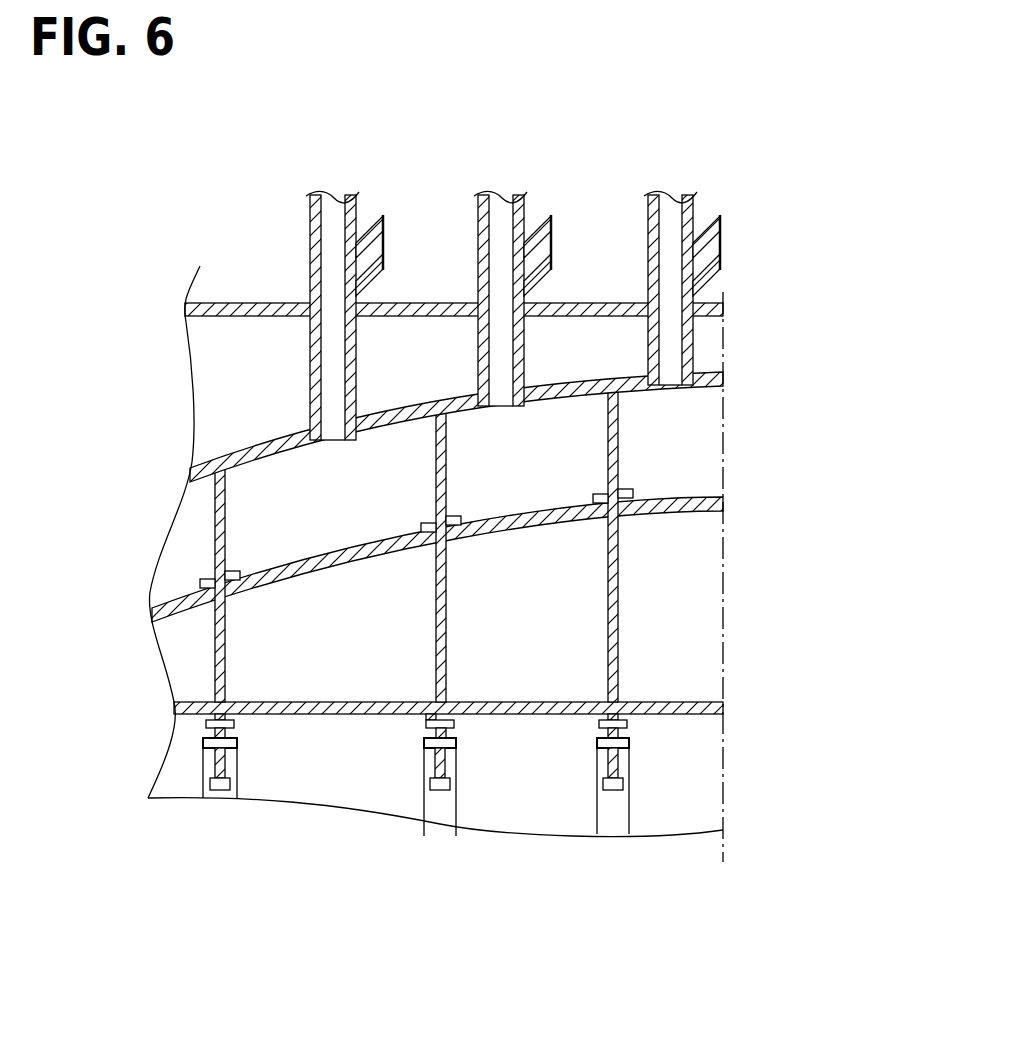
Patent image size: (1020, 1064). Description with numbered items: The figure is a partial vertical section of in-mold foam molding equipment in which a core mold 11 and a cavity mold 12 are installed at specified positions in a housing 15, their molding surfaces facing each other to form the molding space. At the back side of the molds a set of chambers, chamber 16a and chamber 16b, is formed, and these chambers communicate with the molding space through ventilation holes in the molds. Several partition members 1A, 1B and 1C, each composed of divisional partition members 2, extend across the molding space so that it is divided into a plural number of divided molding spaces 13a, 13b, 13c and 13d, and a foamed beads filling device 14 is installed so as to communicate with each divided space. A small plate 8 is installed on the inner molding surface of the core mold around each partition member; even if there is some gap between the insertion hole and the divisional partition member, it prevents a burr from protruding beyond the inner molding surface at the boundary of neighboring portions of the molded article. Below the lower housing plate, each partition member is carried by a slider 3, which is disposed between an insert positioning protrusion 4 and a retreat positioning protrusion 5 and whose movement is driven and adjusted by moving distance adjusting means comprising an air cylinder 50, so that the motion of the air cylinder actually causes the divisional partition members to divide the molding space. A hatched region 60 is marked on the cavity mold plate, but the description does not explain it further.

The filling device 14 is at (363, 195).
The housing 15 is at (232, 302).
The chamber 16a is at (575, 335).
The cavity mold 12 is at (724, 368).
The hatched portion 60 is at (427, 420).
The partition member 1A is at (228, 490).
The partition member 1B is at (447, 432).
The partition member 1C is at (620, 415).
The divisional partition member 2 is at (458, 545).
The plate 8 is at (202, 582).
The divided molding space 13a is at (183, 541).
The divided molding space 13b is at (343, 533).
The divided molding space 13c is at (528, 497).
The divided molding space 13d is at (712, 470).
The core mold 11 is at (720, 505).
The chamber 16b is at (680, 575).
The insert positioning protrusion 4 is at (206, 724).
The slider 3 is at (205, 747).
The retreat positioning protrusion 5 is at (228, 795).
The air cylinder 50 is at (202, 787).